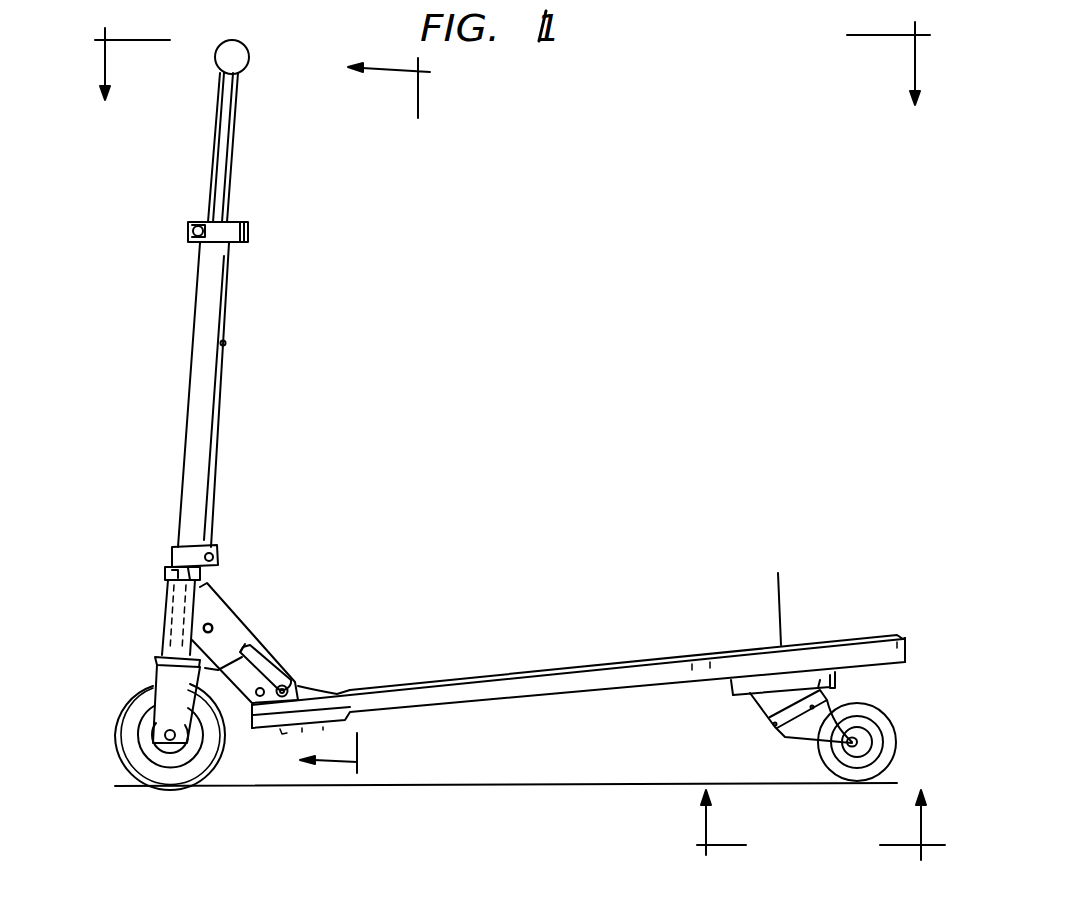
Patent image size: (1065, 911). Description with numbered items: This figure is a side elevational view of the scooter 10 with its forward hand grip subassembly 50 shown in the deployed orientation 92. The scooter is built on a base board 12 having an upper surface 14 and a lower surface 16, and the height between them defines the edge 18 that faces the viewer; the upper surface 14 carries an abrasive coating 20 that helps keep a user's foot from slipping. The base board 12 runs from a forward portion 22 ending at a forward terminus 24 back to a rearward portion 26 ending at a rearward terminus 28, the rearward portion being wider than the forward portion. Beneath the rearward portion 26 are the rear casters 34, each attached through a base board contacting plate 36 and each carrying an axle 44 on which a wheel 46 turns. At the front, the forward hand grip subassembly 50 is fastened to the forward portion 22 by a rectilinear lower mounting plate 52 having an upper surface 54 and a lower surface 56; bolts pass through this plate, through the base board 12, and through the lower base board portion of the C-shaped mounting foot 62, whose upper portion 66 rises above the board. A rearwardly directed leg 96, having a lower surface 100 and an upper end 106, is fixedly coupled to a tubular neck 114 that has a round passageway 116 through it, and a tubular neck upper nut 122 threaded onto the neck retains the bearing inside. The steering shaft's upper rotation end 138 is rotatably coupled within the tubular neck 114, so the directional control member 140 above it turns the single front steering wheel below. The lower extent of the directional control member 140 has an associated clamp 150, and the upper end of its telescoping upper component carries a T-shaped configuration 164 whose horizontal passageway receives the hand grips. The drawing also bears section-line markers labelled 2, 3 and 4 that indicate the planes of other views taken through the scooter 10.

The section line 2- 2 is at (509, 52).
The section line 3- 3 is at (808, 838).
The section line 4- 4 is at (374, 421).
The scooter 10 is at (610, 418).
The base board 12 is at (597, 656).
The upper surface 14 is at (418, 690).
The lower surface 16 is at (556, 700).
The edge 18 is at (635, 680).
The abrasive coating 20 is at (630, 661).
The forward portion 22 is at (478, 712).
The forward terminus 24 is at (243, 736).
The rearward portion 26 is at (782, 612).
The rearward terminus 28 is at (905, 645).
The rear casters 34 is at (899, 745).
The base board contacting plate 36 is at (840, 674).
The axle 44 is at (826, 752).
The wheel 46 is at (856, 782).
The forward hand grip subassembly 50 is at (168, 338).
The lower mounting plate 52 is at (293, 742).
The upper surface 54 is at (337, 695).
The lower surface 56 is at (350, 722).
The mounting foot 62 is at (292, 612).
The upper portion 66 is at (278, 638).
The deployed orientation 92 is at (152, 498).
The rearwardly directed leg 96 is at (238, 608).
The lower surface 100 is at (208, 669).
The upper end 106 is at (222, 598).
The tubular neck 114 is at (178, 604).
The round passageway 116 is at (172, 622).
The tubular neck upper nut 122 is at (170, 578).
The upper rotation end 138 is at (158, 558).
The directional control member 140 is at (270, 358).
The clamp 150 is at (216, 527).
The T-shaped configuration 164 is at (252, 79).